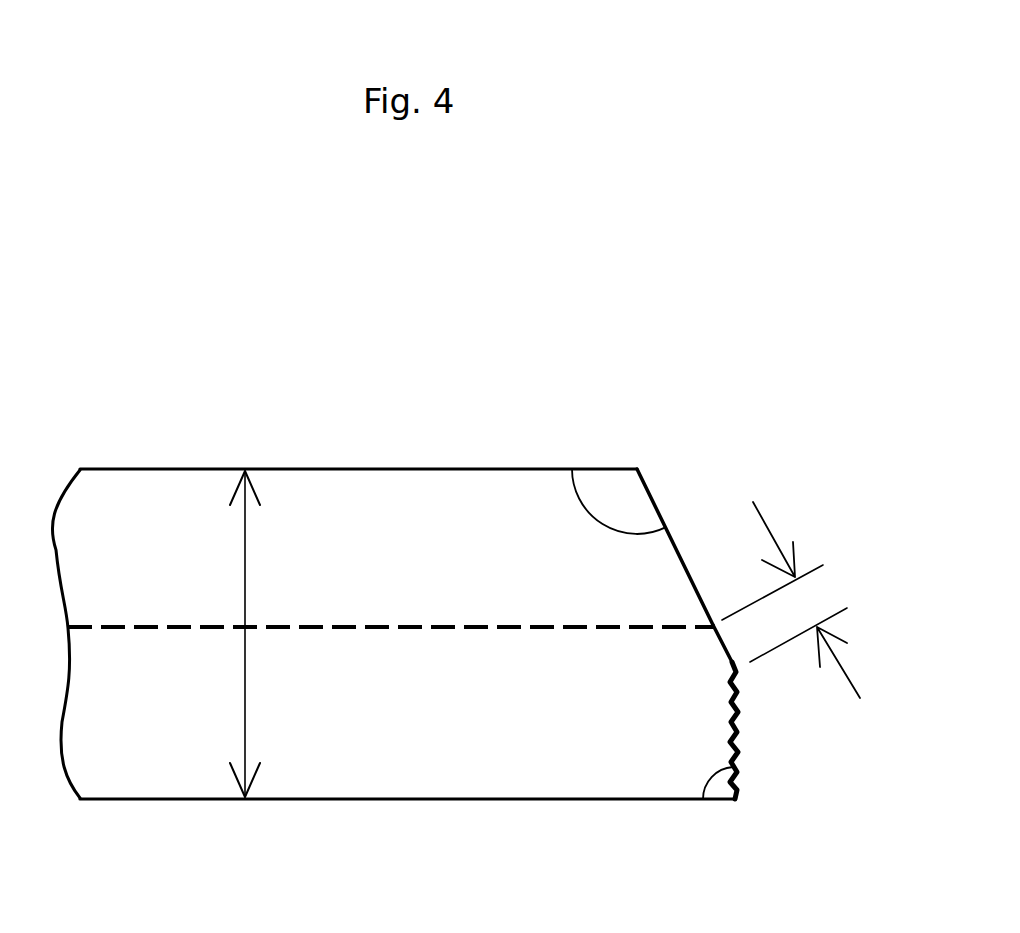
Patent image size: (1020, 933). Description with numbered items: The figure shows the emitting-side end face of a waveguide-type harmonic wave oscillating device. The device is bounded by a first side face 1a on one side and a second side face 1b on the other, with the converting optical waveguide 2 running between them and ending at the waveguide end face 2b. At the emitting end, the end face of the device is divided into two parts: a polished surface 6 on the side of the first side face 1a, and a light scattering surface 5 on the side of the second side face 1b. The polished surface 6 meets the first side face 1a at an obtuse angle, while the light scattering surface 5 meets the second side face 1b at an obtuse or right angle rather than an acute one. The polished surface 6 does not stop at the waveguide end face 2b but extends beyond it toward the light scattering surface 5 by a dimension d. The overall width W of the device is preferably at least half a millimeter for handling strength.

The first side face 1a is at (488, 468).
The second side face 1b is at (572, 800).
The converting optical waveguide 2 is at (437, 626).
The end face of the optical waveguide 2b is at (717, 618).
The light scattering surface 5 is at (745, 745).
The polished surface 6 is at (678, 540).
The width of the waveguide-type harmonic wave oscillating device W is at (243, 569).
The dimension of extension of the polished surface d is at (791, 600).